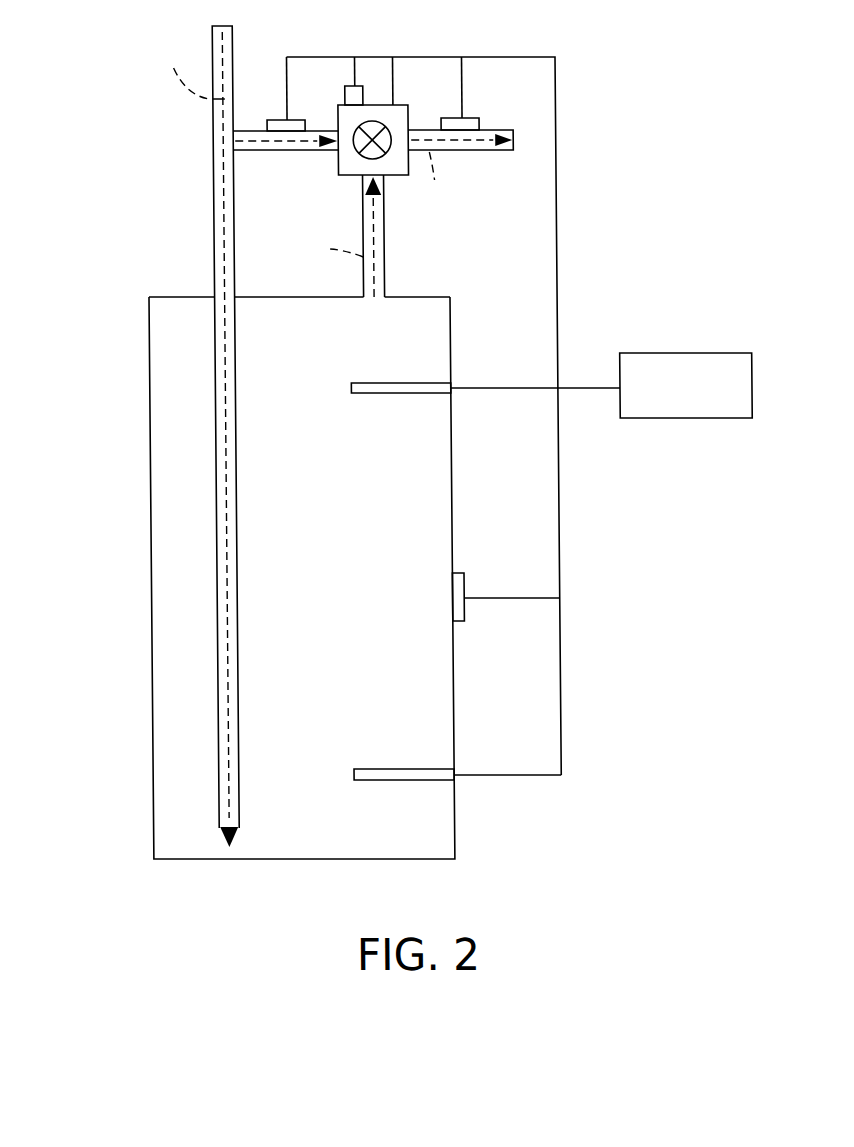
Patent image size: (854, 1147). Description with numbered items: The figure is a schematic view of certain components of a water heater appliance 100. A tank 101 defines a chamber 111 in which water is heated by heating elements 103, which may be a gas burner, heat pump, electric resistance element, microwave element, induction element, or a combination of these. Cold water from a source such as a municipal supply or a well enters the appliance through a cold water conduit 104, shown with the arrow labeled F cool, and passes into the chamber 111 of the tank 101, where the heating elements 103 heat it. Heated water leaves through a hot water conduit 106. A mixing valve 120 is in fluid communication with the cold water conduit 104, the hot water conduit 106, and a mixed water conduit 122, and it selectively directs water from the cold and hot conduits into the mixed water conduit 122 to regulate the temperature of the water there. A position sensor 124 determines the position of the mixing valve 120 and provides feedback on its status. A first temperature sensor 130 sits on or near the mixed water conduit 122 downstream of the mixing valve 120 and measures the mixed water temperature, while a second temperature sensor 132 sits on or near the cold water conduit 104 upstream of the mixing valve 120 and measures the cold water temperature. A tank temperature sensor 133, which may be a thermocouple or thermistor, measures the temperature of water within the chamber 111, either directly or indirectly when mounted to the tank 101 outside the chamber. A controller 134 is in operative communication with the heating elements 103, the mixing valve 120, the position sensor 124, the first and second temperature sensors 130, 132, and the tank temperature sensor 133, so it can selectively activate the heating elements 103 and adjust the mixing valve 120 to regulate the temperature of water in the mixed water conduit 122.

The water heater appliance 100 is at (98, 113).
The tank 101 is at (146, 446).
The heating elements 103 is at (347, 388).
The cold water conduit 104 is at (210, 257).
The hot water conduit 106 is at (382, 272).
The chamber 111 is at (171, 604).
The mixing valve 120 is at (350, 178).
The mixed water conduit 122 is at (492, 151).
The position sensor 124 is at (344, 98).
The first temperature sensor 130 is at (480, 123).
The second temperature sensor 132 is at (279, 120).
The tank temperature sensor 133 is at (459, 582).
The controller 134 is at (601, 385).